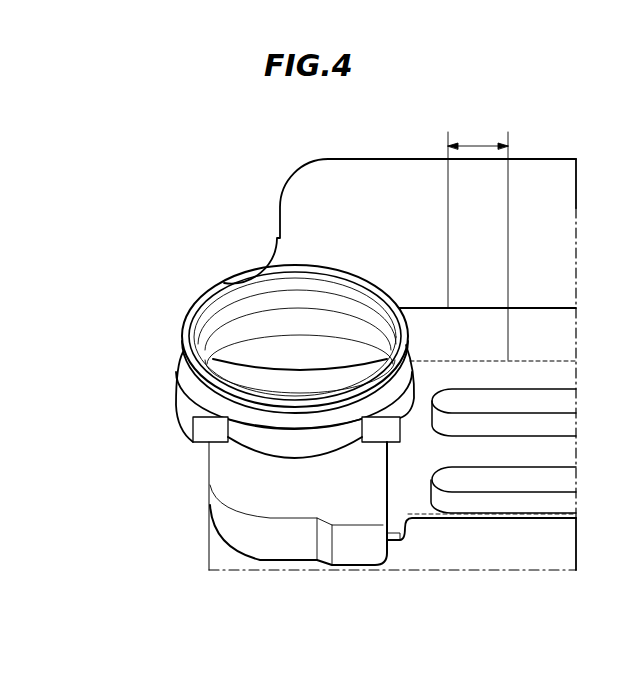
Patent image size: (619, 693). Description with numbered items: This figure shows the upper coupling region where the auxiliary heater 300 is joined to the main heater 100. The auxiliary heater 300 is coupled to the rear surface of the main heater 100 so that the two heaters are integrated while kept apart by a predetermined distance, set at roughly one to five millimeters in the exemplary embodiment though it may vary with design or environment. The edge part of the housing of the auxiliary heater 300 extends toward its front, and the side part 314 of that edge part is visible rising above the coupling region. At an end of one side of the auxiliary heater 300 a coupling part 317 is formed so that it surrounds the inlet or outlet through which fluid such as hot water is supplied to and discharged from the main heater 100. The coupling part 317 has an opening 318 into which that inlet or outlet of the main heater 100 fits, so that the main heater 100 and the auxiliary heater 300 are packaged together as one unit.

The auxiliary heater 300 is at (198, 218).
The side part 314 is at (338, 197).
The coupling part 317 is at (186, 396).
The opening 318 is at (297, 450).
The main heater 100 is at (476, 553).